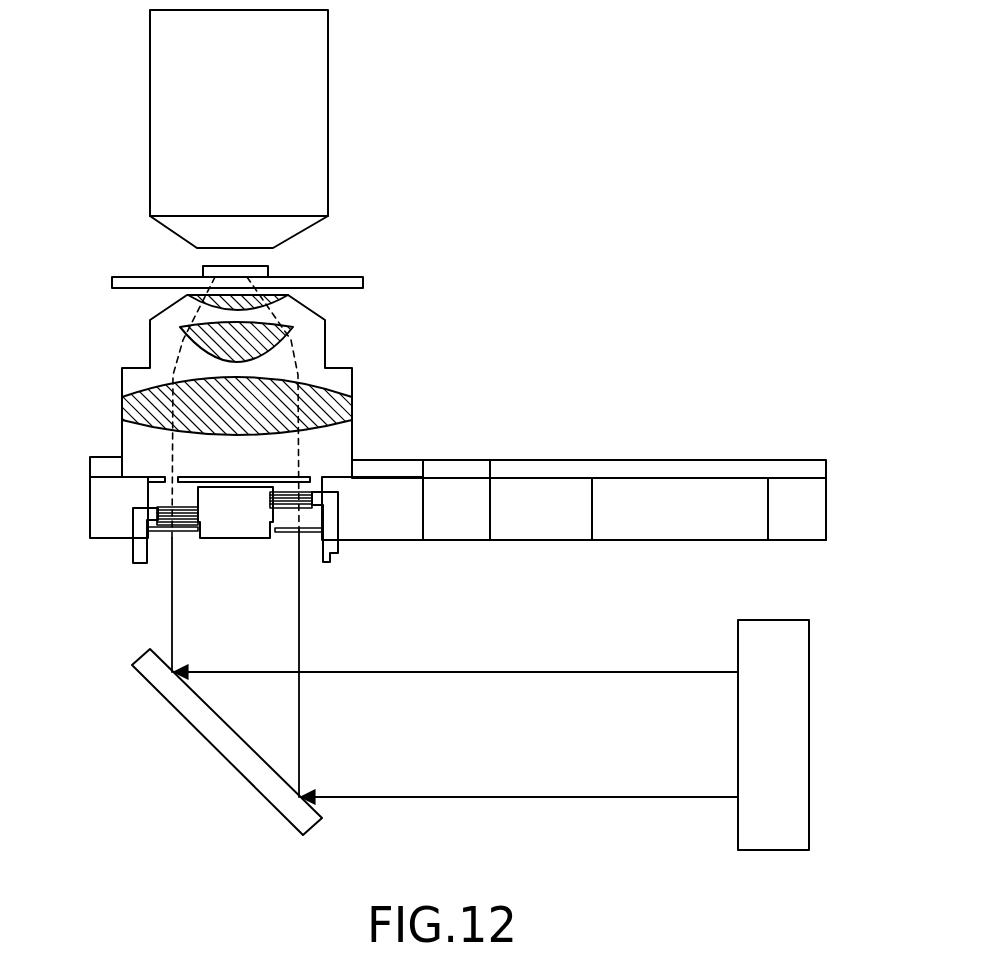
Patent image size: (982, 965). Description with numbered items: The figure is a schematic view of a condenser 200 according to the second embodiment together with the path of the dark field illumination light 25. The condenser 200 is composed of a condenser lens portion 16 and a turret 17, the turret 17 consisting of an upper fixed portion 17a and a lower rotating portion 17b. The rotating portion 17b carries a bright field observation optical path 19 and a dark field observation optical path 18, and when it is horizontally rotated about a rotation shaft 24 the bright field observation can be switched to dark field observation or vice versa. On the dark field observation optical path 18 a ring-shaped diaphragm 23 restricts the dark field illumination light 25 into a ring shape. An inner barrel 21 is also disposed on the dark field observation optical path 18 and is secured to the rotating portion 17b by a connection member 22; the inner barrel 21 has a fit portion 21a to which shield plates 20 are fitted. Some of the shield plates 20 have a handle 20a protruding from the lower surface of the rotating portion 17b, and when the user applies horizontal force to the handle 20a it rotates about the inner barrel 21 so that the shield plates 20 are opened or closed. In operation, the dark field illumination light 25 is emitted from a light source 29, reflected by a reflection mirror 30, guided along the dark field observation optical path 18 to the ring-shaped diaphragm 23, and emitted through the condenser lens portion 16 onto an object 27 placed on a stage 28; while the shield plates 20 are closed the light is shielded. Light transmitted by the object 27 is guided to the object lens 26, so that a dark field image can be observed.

The condenser lens portion 16 is at (325, 345).
The turret 17 is at (642, 450).
The fixed portion 17a is at (830, 468).
The rotating portion 17b is at (830, 537).
The dark field observation optical path 18 is at (322, 528).
The bright field observation optical path 19 is at (667, 525).
The shield plates 20 is at (157, 514).
The handle 20a is at (130, 553).
The inner barrel 21 is at (230, 540).
The fit portion 21a is at (178, 481).
The connection member 22 is at (180, 532).
The ring-shaped diaphragm 23 is at (155, 473).
The rotation shaft 24 is at (470, 463).
The dark field illumination light 25 is at (490, 672).
The object lens 26 is at (330, 108).
The object 27 is at (262, 267).
The stage 28 is at (360, 286).
The light source 29 is at (737, 653).
The reflection mirror 30 is at (207, 740).
The condenser 200 is at (512, 368).